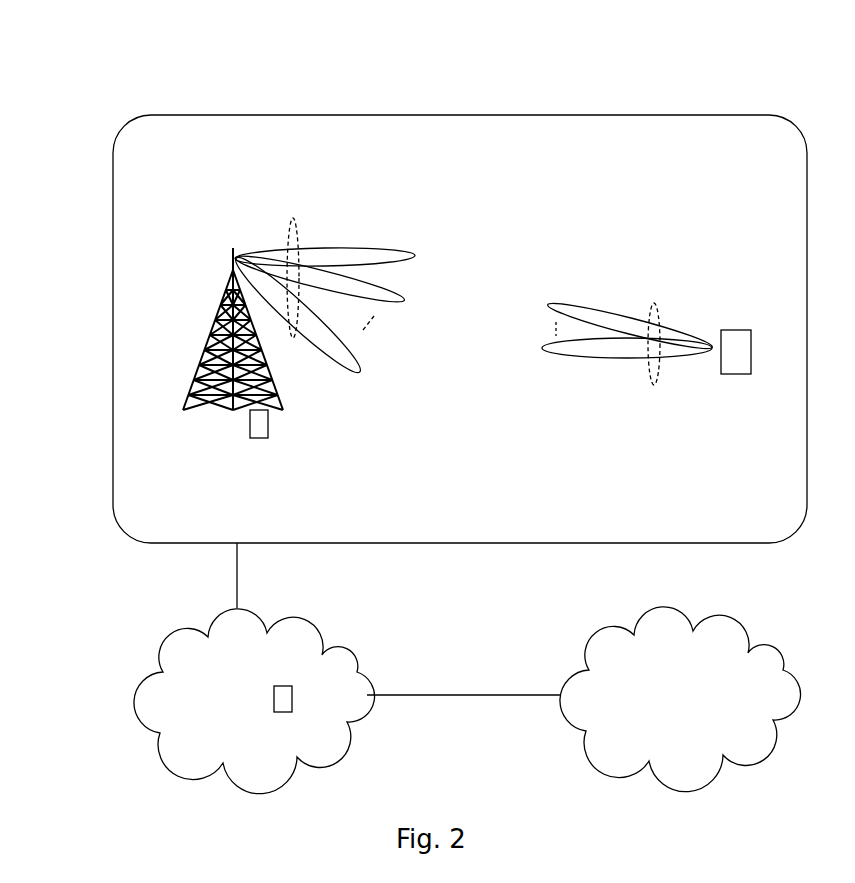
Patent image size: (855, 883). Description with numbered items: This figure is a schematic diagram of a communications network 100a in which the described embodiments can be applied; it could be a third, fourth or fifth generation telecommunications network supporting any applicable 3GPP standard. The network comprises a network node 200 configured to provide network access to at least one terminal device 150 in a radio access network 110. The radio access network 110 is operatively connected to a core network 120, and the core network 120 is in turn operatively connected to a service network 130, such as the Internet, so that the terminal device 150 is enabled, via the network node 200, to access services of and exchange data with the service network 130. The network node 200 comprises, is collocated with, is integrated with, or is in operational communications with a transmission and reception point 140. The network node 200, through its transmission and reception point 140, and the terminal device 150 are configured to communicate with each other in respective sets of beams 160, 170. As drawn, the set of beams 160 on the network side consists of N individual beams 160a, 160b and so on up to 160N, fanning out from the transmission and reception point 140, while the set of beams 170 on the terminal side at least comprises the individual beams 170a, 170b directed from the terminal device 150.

The communications network 100a is at (192, 58).
The radio access network 110 is at (113, 378).
The core network 120 is at (238, 682).
The service network 130 is at (695, 712).
The transmission and reception point 140 is at (232, 262).
The terminal device 150 is at (736, 374).
The set of beams 160 is at (296, 228).
The individual beam 160a is at (406, 258).
The individual beam 160b is at (402, 300).
The individual beam 160N is at (360, 372).
The set of beams 170 is at (654, 385).
The individual beam 170a is at (552, 305).
The individual beam 170b is at (572, 358).
The network node 200 is at (250, 428).